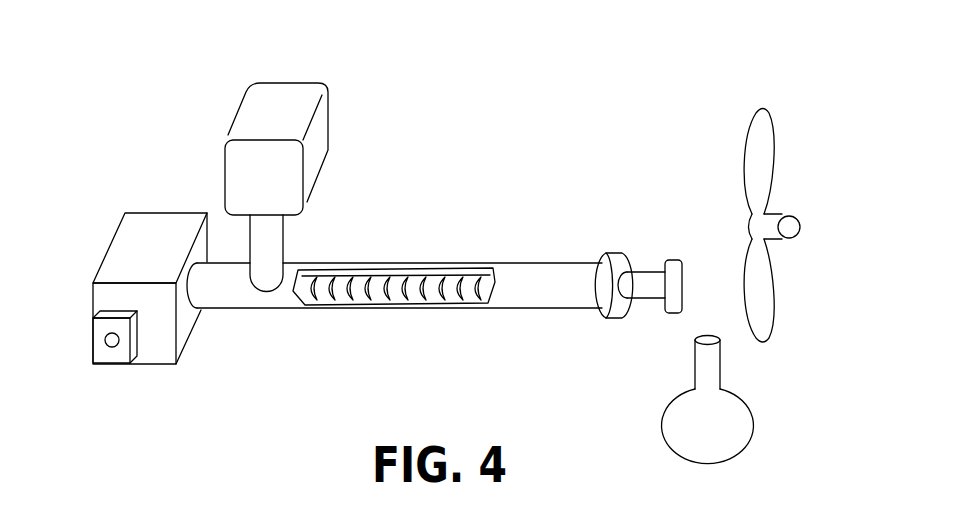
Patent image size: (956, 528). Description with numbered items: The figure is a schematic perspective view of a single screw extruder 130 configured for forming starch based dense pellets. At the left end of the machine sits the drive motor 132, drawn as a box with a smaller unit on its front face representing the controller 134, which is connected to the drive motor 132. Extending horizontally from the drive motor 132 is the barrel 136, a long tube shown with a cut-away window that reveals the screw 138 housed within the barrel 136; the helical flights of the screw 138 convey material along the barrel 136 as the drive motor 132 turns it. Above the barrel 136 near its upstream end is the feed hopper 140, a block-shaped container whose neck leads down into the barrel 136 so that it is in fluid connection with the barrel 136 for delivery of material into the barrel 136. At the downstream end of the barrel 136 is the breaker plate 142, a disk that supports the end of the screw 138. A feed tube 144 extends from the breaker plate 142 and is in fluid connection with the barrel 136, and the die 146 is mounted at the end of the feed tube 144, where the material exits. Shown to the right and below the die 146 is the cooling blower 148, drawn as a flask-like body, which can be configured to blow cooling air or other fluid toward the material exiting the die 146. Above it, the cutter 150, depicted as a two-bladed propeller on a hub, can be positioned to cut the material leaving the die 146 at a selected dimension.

The single screw extruder 130 is at (448, 68).
The drive motor 132 is at (108, 252).
The controller 134 is at (95, 338).
The barrel 136 is at (516, 309).
The screw 138 is at (358, 290).
The feed hopper 140 is at (333, 132).
The breaker plate 142 is at (615, 252).
The feed tube 144 is at (655, 299).
The die 146 is at (683, 272).
The cooling blower 148 is at (753, 424).
The cutter 150 is at (800, 222).